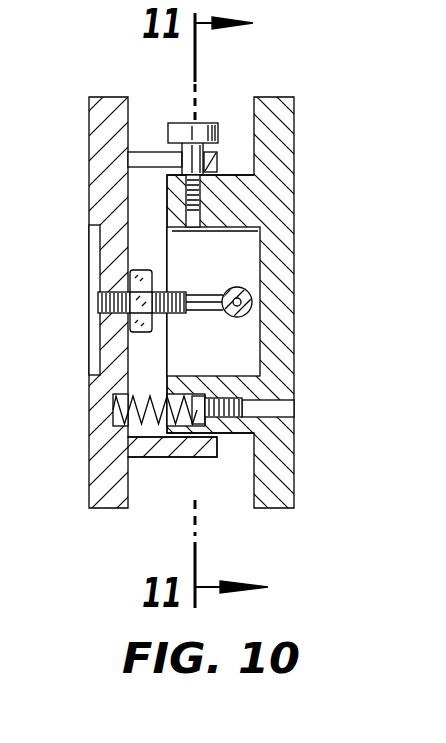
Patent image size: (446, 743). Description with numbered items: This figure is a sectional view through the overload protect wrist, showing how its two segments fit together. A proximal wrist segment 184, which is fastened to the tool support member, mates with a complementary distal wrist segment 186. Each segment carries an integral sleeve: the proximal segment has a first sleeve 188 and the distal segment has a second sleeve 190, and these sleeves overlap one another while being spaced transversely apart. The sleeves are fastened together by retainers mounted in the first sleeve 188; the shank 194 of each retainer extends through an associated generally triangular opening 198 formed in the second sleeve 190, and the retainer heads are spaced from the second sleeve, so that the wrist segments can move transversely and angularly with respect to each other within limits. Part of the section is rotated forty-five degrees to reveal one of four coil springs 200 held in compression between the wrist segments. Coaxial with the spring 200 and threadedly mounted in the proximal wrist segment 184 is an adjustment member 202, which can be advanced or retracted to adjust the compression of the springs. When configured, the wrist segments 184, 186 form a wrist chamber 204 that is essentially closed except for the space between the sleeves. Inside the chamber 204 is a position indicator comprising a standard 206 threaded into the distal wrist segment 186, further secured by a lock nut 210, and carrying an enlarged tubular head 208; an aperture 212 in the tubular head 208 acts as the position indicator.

The proximal wrist segment 184 is at (285, 117).
The distal wrist segment 186 is at (106, 130).
The first sleeve 188 is at (238, 175).
The second sleeve 190 is at (165, 458).
The shank 194 is at (192, 140).
The triangular opening 198 is at (157, 157).
The coil spring 200 is at (118, 410).
The adjustment member 202 is at (223, 422).
The wrist chamber 204 is at (252, 257).
The standard 206 is at (200, 291).
The tubular head 208 is at (238, 317).
The lock nut 210 is at (153, 321).
The aperture 212 is at (253, 300).